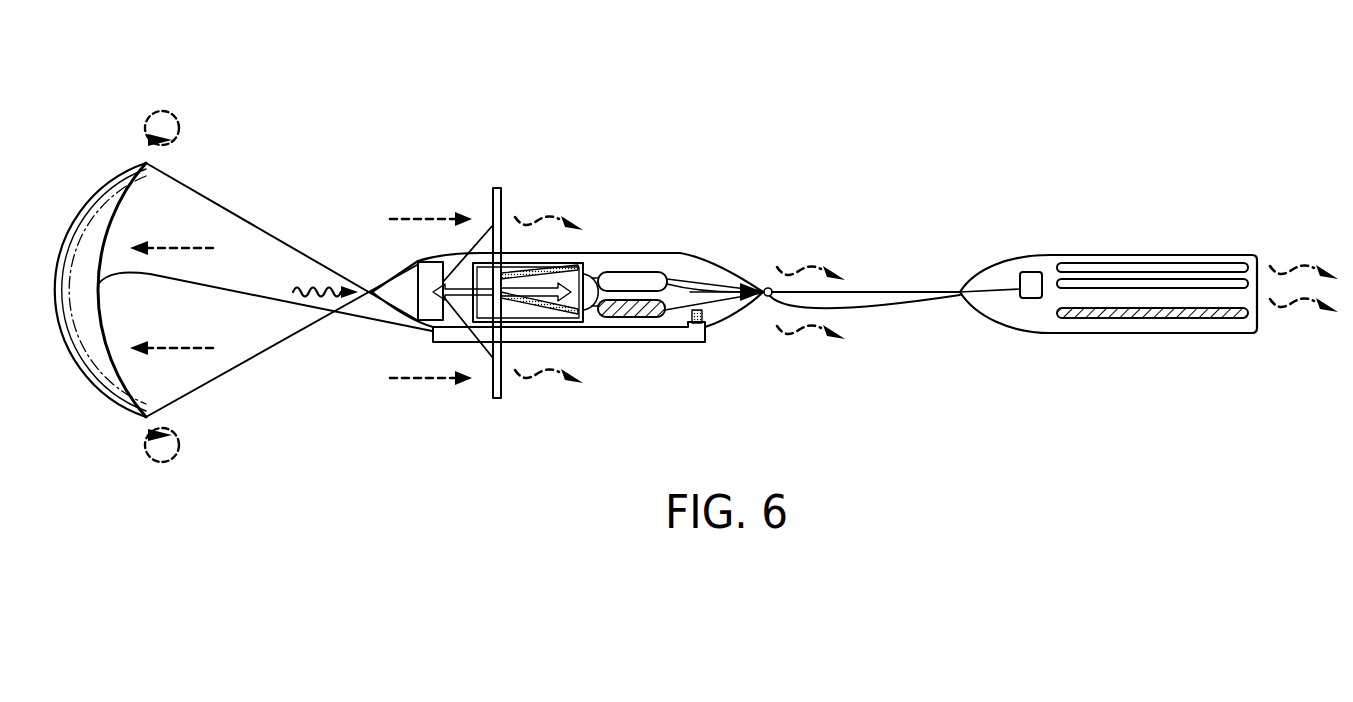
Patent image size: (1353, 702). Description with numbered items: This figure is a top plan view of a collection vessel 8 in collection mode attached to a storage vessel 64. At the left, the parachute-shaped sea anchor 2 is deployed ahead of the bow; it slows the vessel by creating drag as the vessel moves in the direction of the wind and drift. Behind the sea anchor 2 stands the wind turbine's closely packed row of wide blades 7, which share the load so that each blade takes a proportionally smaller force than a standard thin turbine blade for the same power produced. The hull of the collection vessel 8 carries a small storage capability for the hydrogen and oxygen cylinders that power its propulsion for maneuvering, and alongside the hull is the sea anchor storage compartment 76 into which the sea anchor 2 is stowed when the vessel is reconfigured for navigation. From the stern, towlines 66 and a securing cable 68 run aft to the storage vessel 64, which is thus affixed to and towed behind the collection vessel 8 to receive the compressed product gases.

The sea anchor 2 is at (90, 217).
The blades 7 is at (503, 203).
The collection vessel 8 is at (632, 253).
The storage vessel 64 is at (1107, 255).
The towlines 66 is at (878, 292).
The securing cable 68 is at (868, 305).
The sea anchor storage compartment 76 is at (620, 342).